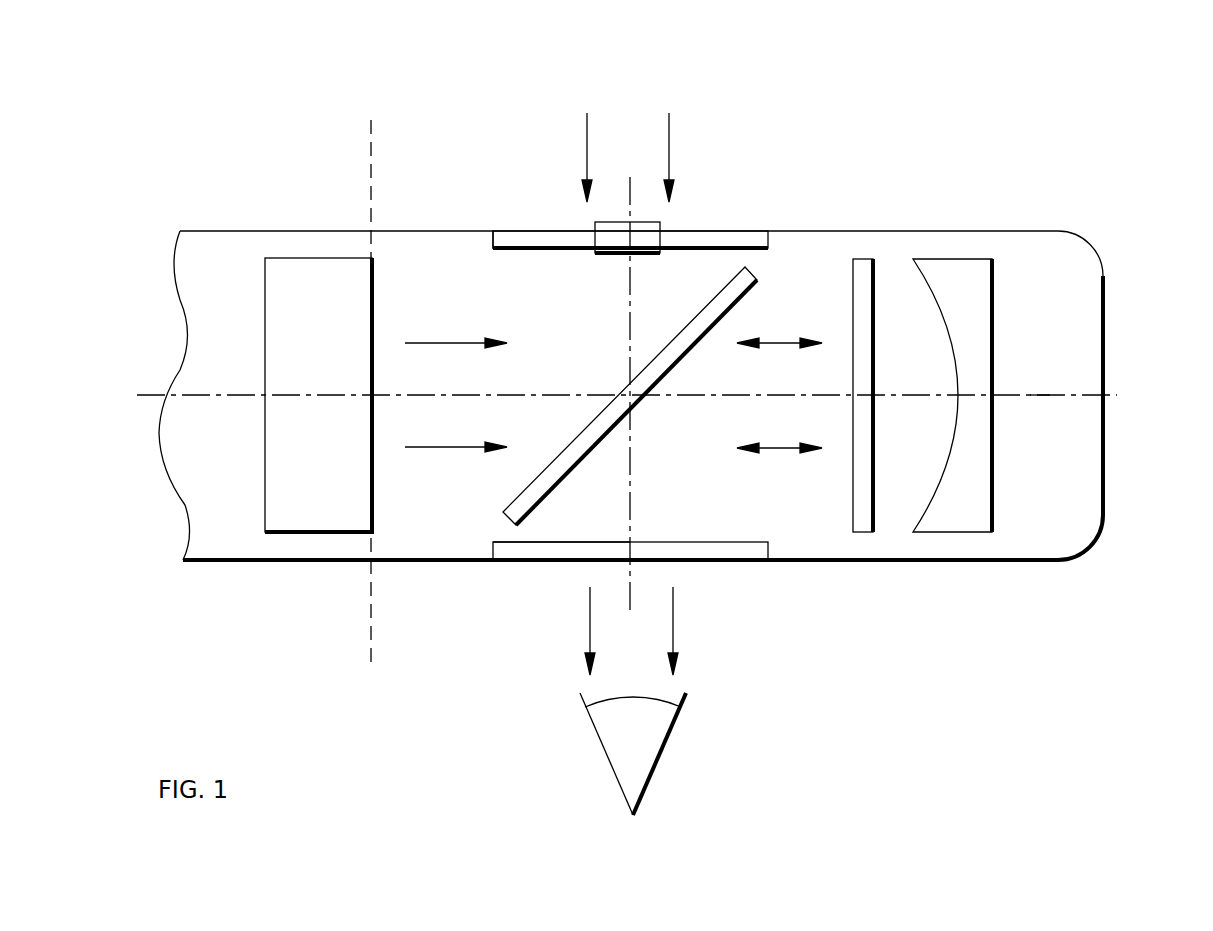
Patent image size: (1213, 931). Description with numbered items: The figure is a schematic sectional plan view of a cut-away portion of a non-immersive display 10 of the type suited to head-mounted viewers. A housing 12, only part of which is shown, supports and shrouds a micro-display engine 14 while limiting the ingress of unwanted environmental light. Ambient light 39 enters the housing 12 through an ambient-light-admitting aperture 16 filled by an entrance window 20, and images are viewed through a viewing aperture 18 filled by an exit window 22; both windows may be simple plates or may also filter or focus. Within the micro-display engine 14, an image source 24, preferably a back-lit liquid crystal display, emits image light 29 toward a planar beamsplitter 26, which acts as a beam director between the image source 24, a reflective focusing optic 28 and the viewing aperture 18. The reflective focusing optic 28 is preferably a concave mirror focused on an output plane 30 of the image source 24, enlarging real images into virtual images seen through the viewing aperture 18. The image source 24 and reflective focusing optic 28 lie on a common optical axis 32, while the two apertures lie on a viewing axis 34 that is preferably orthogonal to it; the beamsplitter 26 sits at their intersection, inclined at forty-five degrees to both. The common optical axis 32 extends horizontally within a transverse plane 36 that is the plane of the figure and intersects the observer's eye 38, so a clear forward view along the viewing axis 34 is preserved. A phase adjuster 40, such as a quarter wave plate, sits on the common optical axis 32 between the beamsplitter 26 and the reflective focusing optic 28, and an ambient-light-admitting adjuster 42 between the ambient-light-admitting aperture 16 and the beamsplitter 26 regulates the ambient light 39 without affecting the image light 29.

The non-immersive display 10 is at (952, 170).
The housing 12 is at (1105, 310).
The micro-display engine 14 is at (432, 254).
The ambient-light-admitting aperture 16 is at (752, 231).
The viewing aperture 18 is at (737, 562).
The entrance window 20 is at (503, 238).
The exit window 22 is at (520, 552).
The image source 24 is at (300, 464).
The beamsplitter 26 is at (683, 345).
The reflective focusing optic 28 is at (955, 365).
The image light 29 is at (462, 342).
The output plane 30 is at (371, 152).
The common optical axis 32 is at (1035, 393).
The viewing axis 34 is at (633, 480).
The transverse plane 36 is at (842, 713).
The observer's eye 38 is at (605, 753).
The ambient light 39 is at (582, 146).
The phase adjuster 40 is at (857, 300).
The ambient-light-admitting adjuster 42 is at (645, 228).